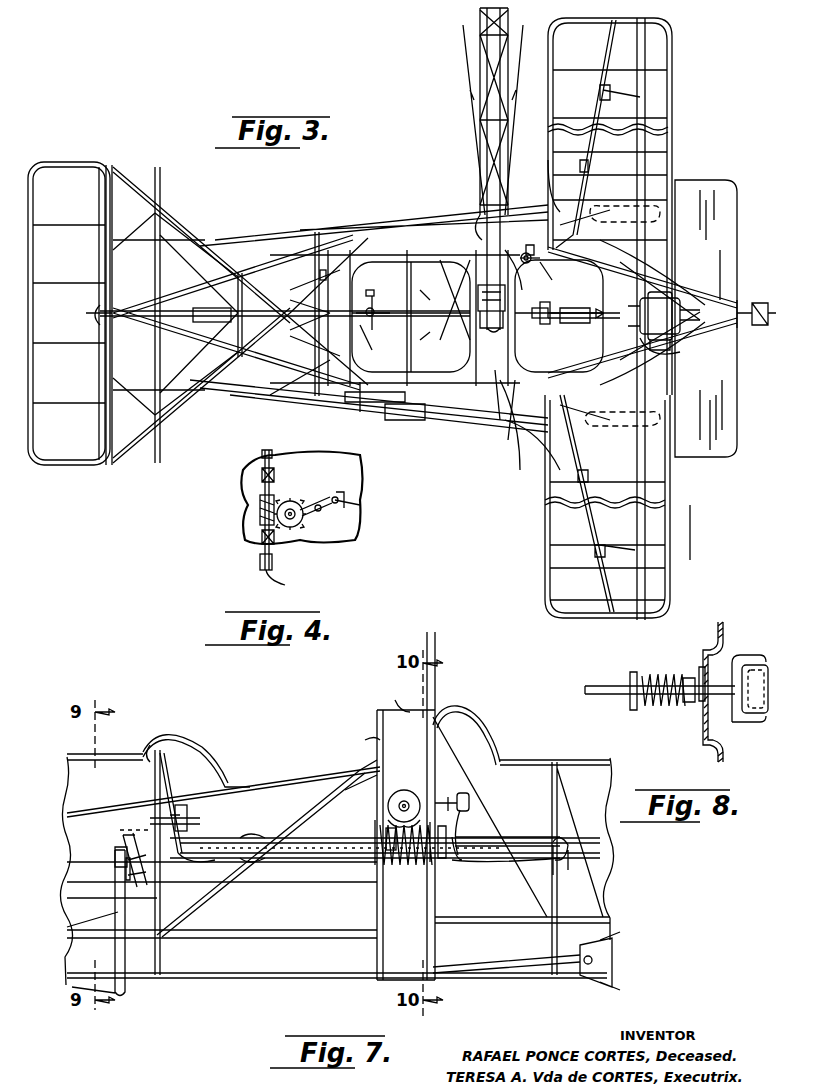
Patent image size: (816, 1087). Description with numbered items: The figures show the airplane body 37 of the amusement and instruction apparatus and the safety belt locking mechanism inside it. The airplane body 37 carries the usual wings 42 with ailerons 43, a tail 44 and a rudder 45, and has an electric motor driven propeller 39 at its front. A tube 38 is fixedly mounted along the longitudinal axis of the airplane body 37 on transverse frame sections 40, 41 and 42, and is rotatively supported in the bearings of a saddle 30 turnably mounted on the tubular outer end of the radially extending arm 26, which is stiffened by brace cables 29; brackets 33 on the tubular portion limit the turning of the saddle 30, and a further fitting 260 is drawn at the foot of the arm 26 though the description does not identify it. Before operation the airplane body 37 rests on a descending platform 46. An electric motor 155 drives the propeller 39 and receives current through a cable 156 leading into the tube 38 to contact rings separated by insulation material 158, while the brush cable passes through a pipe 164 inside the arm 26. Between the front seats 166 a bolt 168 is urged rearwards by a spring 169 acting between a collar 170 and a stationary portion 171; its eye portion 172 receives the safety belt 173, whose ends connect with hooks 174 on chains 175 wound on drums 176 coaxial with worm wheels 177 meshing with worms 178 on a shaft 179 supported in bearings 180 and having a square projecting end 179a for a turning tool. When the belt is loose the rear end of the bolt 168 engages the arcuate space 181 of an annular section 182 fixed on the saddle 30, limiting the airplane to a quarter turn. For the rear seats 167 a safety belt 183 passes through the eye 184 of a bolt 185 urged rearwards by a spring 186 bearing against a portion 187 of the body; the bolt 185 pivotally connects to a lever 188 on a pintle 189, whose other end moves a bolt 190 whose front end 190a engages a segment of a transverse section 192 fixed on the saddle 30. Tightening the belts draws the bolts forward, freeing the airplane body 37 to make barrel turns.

In FIG. 3, the radially extending arm 26 is at (478, 148).
In FIG. 3, the brace cables 29 is at (467, 47).
In FIG. 3, the saddle 30 is at (442, 300).
In FIG. 7, the brackets 33 is at (377, 770).
In FIG. 3, the airplane body 37 is at (684, 561).
In FIG. 7, the airplane body 37 is at (248, 988).
In FIG. 3, the tube 38 is at (462, 335).
In FIG. 7, the tube 38 is at (512, 860).
In FIG. 3, the propeller 39 is at (763, 303).
In FIG. 7, the transverse frame section 40 is at (200, 882).
In FIG. 7, the transverse frame section 41 is at (400, 908).
In FIG. 3, the wings 42 is at (670, 533).
In FIG. 7, the wings 42 is at (436, 908).
In FIG. 3, the ailerons 43 is at (545, 520).
In FIG. 3, the tail 44 is at (83, 177).
In FIG. 3, the rudder 45 is at (70, 322).
In FIG. 3, the platform 46 is at (722, 428).
In FIG. 3, the electric motor 155 is at (655, 298).
In FIG. 7, the cable 156 is at (568, 846).
In FIG. 7, the insulation material 158 is at (436, 850).
In FIG. 3, the pipe 164 is at (678, 354).
In FIG. 3, the front seats 166 is at (566, 325).
In FIG. 7, the front seats 166 is at (518, 836).
In FIG. 3, the rear seats 167 is at (412, 345).
In FIG. 7, the rear seats 167 is at (268, 840).
In FIG. 8, the bolt 168 is at (612, 688).
In FIG. 7, the bolt 168 is at (398, 806).
In FIG. 3, the spring 169 is at (538, 273).
In FIG. 8, the spring 169 is at (665, 684).
In FIG. 7, the spring 169 is at (460, 745).
In FIG. 8, the collar 170 is at (636, 705).
In FIG. 8, the stationary portion 171 is at (705, 738).
In FIG. 3, the eye portion 172 is at (538, 285).
In FIG. 8, the eye portion 172 is at (736, 655).
In FIG. 7, the eye portion 172 is at (470, 782).
In FIG. 3, the safety belt 173 is at (540, 328).
In FIG. 8, the safety belt 173 is at (757, 665).
In FIG. 7, the safety belt 173 is at (470, 800).
In FIG. 4, the hooks 174 is at (352, 495).
In FIG. 8, the hooks 174 is at (713, 692).
In FIG. 3, the chains 175 is at (588, 386).
In FIG. 4, the chains 175 is at (356, 508).
In FIG. 4, the drums 176 is at (332, 492).
In FIG. 3, the worm wheels 177 is at (298, 318).
In FIG. 4, the worm wheels 177 is at (292, 503).
In FIG. 3, the worms 178 is at (478, 400).
In FIG. 4, the worms 178 is at (258, 502).
In FIG. 3, the shaft 179 is at (522, 250).
In FIG. 4, the shaft 179 is at (262, 455).
In FIG. 3, the projecting end 179a is at (390, 405).
In FIG. 4, the projecting end 179a is at (296, 577).
In FIG. 4, the bearings 180 is at (276, 542).
In FIG. 3, the arcuate space 181 is at (321, 266).
In FIG. 7, the annular section 182 is at (412, 712).
In FIG. 3, the safety belt 183 is at (377, 309).
In FIG. 7, the safety belt 183 is at (188, 828).
In FIG. 3, the eye 184 is at (378, 342).
In FIG. 7, the eye 184 is at (188, 812).
In FIG. 3, the bolt 185 is at (381, 295).
In FIG. 7, the bolt 185 is at (190, 775).
In FIG. 7, the spring 186 is at (150, 818).
In FIG. 7, the portion 187 is at (150, 760).
In FIG. 7, the lever 188 is at (122, 833).
In FIG. 7, the pintle 189 is at (126, 870).
In FIG. 7, the bolt 190 is at (285, 888).
In FIG. 7, the front end 190a is at (394, 860).
In FIG. 7, the transverse section 192 is at (372, 712).
In FIG. 3, the pylon fitting 260 is at (482, 250).